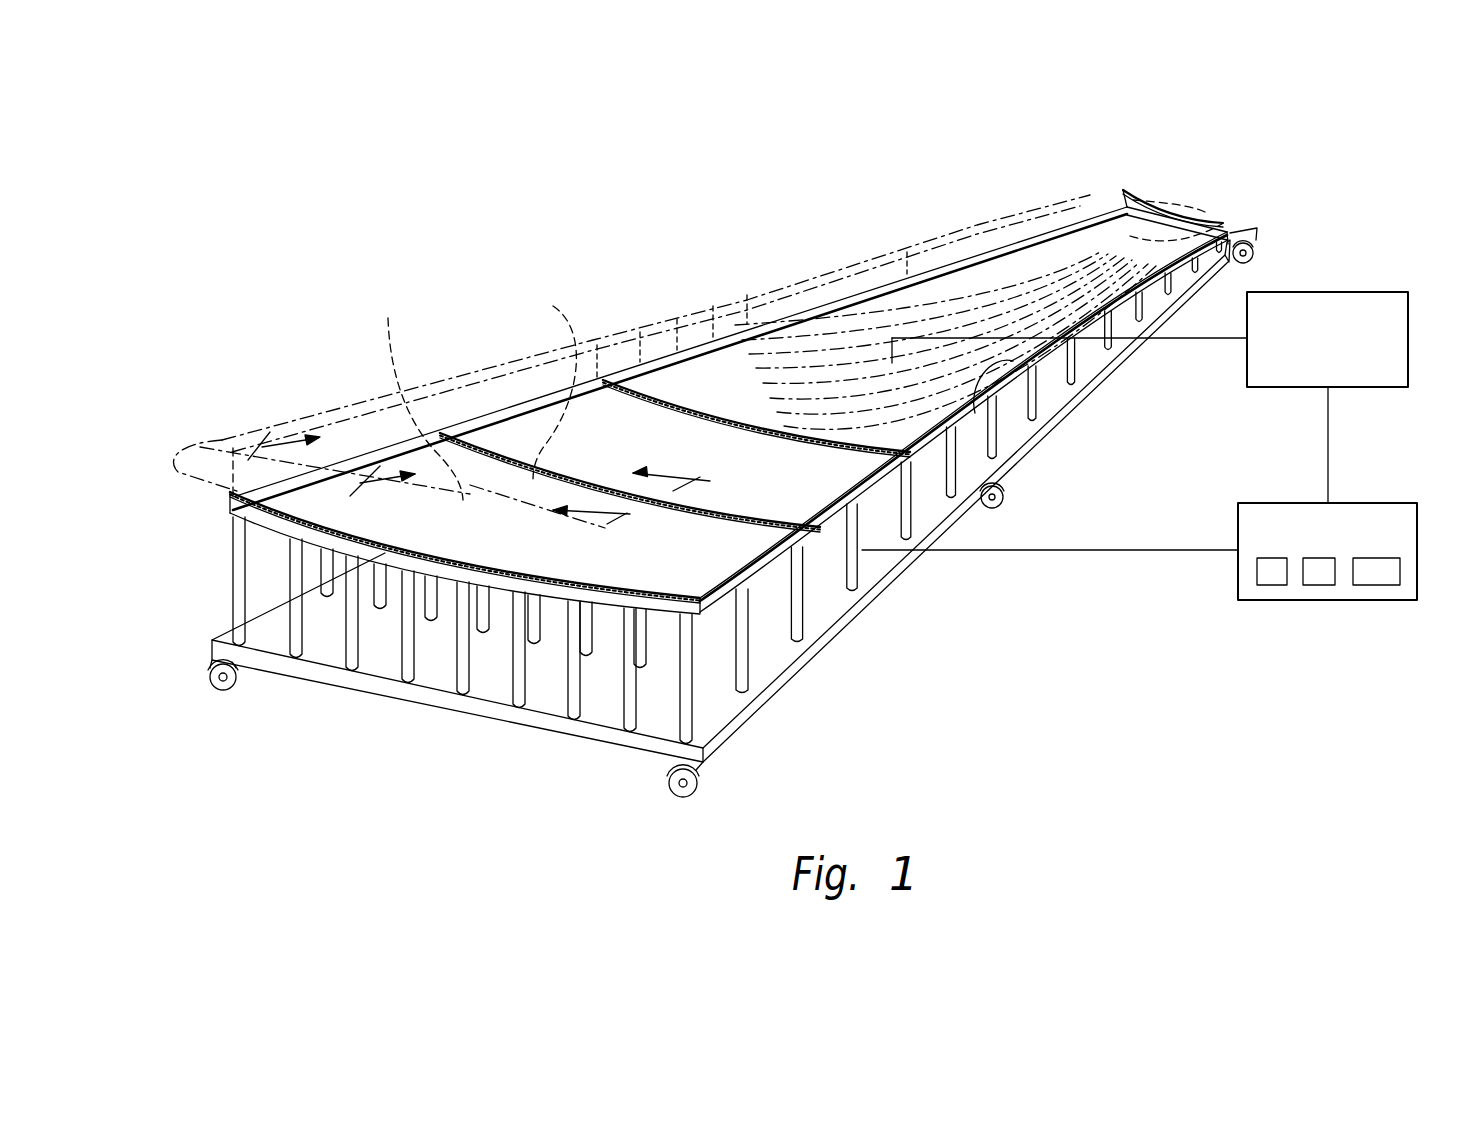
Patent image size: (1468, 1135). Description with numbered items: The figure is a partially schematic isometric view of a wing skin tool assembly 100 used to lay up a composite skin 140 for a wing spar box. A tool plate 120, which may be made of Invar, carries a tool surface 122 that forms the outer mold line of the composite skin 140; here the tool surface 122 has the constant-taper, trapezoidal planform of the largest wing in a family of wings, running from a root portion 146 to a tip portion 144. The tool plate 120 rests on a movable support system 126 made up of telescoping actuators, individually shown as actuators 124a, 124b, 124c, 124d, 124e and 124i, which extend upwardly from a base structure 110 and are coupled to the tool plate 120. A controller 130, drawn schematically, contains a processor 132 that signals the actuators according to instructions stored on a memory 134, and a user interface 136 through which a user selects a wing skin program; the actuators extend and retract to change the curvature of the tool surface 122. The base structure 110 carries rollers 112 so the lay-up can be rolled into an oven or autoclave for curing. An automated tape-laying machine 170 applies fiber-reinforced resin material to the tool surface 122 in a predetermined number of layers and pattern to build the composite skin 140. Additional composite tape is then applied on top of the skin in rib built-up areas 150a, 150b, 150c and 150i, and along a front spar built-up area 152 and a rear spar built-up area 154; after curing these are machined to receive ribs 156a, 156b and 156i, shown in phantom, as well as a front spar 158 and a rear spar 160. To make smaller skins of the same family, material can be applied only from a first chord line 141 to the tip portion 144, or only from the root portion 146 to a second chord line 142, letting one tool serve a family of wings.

The wing skin tool assembly 100 is at (315, 250).
The base structure 110 is at (210, 640).
The rollers 112 is at (217, 690).
The tool plate 120 is at (228, 510).
The tool surface 122 is at (1003, 470).
The telescoping actuator 124a is at (748, 663).
The telescoping actuator 124b is at (807, 622).
The telescoping actuator 124c is at (862, 572).
The telescoping actuator 124d is at (627, 713).
The telescoping actuator 124e is at (568, 695).
The telescoping actuator 124i is at (233, 577).
The movable support system 126 is at (337, 640).
The controller 130 is at (1362, 503).
The processor 132 is at (1268, 586).
The memory 134 is at (1318, 586).
The user interface 136 is at (1380, 586).
The composite skin 140 is at (376, 420).
The first chord line 141 is at (546, 362).
The second chord line 142 is at (1205, 212).
The tip portion 144 is at (1120, 190).
The root portion 146 is at (235, 475).
The rib built-up area 150a is at (440, 558).
The rib built-up area 150b is at (496, 448).
The rib built-up area 150c is at (697, 410).
The rib built-up area 150i is at (1174, 215).
The front spar built-up area 152 is at (826, 290).
The rear spar built-up area 154 is at (1013, 361).
The rib 156a is at (348, 397).
The rib 156b is at (539, 382).
The rib 156i is at (1222, 224).
The front spar 158 is at (840, 265).
The rear spar 160 is at (1146, 302).
The automated tape-laying machine 170 is at (1366, 292).